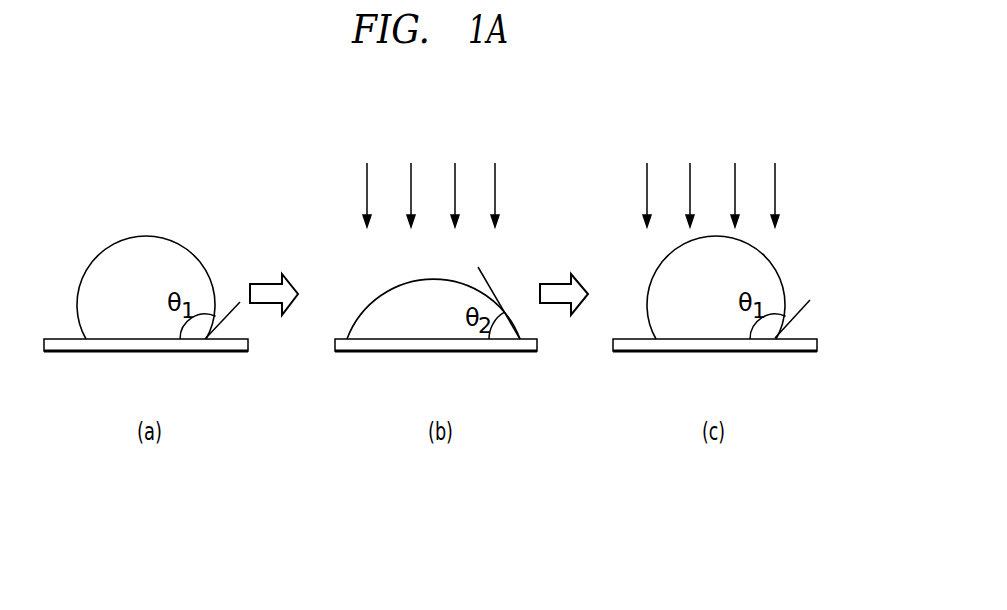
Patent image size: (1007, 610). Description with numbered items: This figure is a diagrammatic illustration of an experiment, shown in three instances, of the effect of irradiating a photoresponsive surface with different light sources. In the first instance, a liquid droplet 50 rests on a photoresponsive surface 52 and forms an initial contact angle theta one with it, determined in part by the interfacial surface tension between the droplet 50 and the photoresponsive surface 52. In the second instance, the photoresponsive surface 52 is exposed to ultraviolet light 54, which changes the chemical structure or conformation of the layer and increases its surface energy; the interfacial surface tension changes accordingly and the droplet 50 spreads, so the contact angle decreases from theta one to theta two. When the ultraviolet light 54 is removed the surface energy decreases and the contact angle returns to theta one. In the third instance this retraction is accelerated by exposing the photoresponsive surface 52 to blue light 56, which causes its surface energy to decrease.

The liquid droplet 50 is at (163, 252).
The photoresponsive surface 52 is at (222, 345).
The ultraviolet light 54 is at (518, 204).
The blue light 56 is at (800, 195).